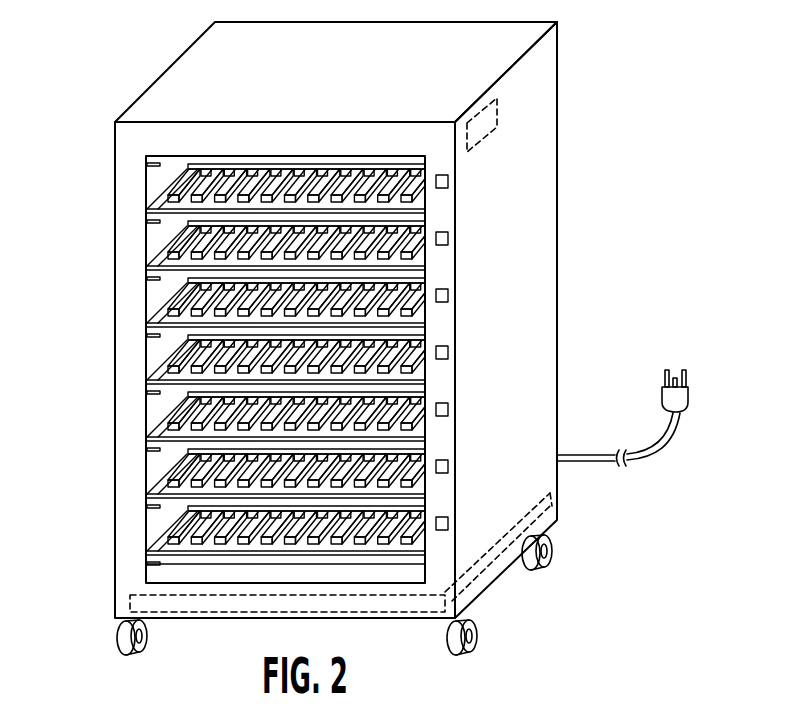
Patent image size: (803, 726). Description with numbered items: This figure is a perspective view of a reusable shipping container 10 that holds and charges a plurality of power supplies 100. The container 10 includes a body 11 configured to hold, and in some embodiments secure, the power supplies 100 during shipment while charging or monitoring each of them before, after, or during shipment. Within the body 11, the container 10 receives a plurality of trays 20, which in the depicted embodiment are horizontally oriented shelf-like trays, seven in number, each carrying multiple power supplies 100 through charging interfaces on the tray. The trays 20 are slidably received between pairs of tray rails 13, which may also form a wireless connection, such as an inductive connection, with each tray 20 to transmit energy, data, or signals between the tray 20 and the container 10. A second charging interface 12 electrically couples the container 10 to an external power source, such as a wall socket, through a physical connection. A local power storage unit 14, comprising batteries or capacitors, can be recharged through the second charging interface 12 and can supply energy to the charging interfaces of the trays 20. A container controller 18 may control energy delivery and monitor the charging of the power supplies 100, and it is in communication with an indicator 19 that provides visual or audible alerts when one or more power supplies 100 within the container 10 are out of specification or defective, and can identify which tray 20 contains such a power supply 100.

The shipping container 10 is at (582, 83).
The body 11 is at (548, 258).
The second charging interface 12 is at (645, 455).
The tray rails 13 is at (160, 487).
The local power storage unit 14 is at (490, 572).
The container controller 18 is at (482, 138).
The indicator 19 is at (448, 467).
The trays 20 is at (173, 268).
The power supplies 100 is at (178, 223).